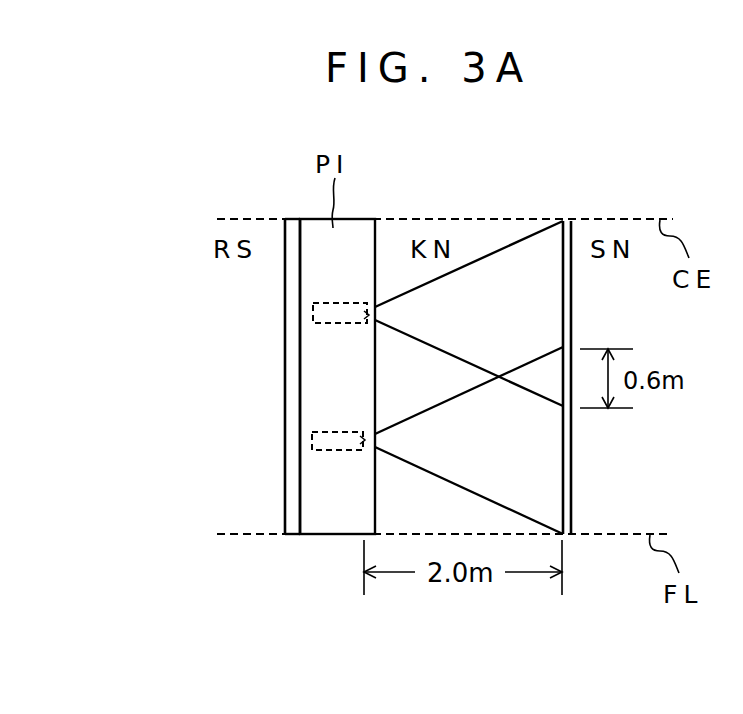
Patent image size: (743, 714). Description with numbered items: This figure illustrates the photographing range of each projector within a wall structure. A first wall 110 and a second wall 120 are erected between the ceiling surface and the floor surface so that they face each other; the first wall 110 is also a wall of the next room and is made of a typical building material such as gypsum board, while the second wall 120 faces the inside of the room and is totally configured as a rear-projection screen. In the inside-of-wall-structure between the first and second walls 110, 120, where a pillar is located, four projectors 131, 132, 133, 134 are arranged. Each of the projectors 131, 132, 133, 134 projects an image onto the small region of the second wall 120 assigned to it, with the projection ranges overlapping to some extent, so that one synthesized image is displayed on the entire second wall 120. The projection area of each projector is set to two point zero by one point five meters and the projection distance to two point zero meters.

The first wall 110 is at (293, 527).
The second wall 120 is at (572, 498).
The projector 131 is at (243, 325).
The projector 132 is at (241, 451).
The projector 133 is at (313, 303).
The projector 134 is at (312, 432).